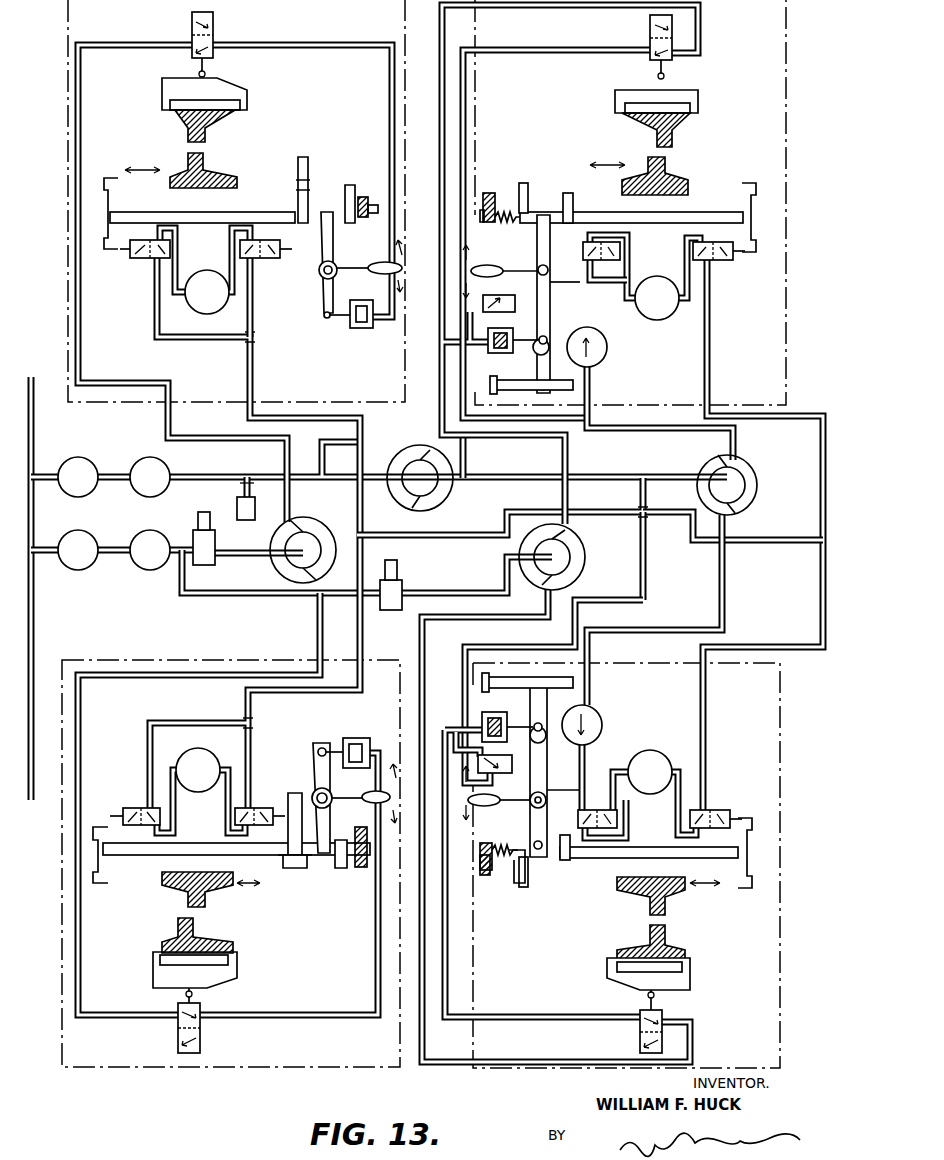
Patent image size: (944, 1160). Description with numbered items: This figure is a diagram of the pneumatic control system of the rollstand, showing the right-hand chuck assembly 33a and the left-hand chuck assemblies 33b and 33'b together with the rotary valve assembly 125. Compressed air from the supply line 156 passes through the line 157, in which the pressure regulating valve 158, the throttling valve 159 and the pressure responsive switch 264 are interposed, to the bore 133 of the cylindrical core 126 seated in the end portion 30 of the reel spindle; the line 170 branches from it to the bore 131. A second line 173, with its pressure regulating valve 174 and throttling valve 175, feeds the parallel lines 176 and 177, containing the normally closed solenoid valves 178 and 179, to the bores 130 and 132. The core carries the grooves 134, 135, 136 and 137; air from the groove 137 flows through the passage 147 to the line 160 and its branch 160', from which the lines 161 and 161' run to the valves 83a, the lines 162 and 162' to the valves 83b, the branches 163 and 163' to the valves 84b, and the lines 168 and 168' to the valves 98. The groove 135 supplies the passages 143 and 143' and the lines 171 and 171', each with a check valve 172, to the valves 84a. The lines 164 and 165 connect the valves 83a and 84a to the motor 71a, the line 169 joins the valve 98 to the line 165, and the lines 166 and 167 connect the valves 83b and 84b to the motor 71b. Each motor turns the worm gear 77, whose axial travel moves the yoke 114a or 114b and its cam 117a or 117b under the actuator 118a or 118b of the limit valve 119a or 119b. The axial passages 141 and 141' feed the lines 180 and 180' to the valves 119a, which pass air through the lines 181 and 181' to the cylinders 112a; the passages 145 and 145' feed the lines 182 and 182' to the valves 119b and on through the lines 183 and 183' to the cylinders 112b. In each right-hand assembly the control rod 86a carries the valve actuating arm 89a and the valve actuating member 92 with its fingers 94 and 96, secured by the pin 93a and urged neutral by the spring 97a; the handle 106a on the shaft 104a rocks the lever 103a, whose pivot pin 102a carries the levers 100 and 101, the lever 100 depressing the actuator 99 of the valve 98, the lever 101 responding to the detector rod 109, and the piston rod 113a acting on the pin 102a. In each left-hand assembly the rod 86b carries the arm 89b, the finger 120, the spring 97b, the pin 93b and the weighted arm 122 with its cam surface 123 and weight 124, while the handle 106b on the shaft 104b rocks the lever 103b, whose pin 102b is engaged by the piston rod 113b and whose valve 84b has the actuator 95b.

The end portion of reel spindle 30 is at (322, 518).
The right-hand chuck assembly 33a is at (786, 100).
The left-hand chuck assembly 33b is at (62, 890).
The left-hand chuck assembly 33'b is at (213, 201).
The reversible fluid pressure operated motor 71a is at (657, 320).
The reversible fluid pressure operated motor 71b is at (202, 314).
The worm gear 77 is at (210, 155).
The valve 83a is at (716, 262).
The valve 83b is at (135, 275).
The valve 84a is at (615, 242).
The valve 84b is at (262, 258).
The control rod 86a is at (736, 213).
The control rod 86b is at (272, 213).
The valve actuating arm 89a is at (750, 218).
The valve actuating arm 89b is at (130, 252).
The valve actuating member 92 is at (555, 213).
The pin 93a is at (550, 868).
The pin 93b is at (305, 868).
The finger 94 is at (575, 212).
The actuator of valve 84b 95b is at (292, 800).
The finger 96 is at (525, 190).
The compression spring 97a is at (492, 875).
The compression spring 97b is at (362, 868).
The valve 98 is at (506, 312).
The actuator 99 is at (528, 280).
The actuating lever 100 is at (552, 330).
The lever 101 is at (546, 386).
The pivot pin 102a is at (548, 338).
The pin 102b is at (322, 325).
The double armed lever 103a is at (548, 330).
The lever 103b is at (322, 312).
The shaft 104a is at (535, 822).
The shaft 104b is at (318, 278).
The operating handle 106a is at (502, 533).
The handle 106b is at (367, 532).
The detector rod 109 is at (505, 390).
The cylinder 112a is at (495, 352).
The cylinder 112b is at (362, 330).
The piston rod 113a is at (528, 350).
The piston rod 113b is at (352, 300).
The yoke 114a is at (696, 108).
The yoke 114b is at (240, 100).
The cam 117a is at (693, 90).
The cam 117b is at (162, 80).
The actuator 118a is at (648, 996).
The actuator 118b is at (200, 992).
The limit valve 119a is at (650, 28).
The limit valve 119b is at (213, 22).
The finger 120 is at (350, 185).
The valve actuating arm 122 is at (306, 158).
The cam surface 123 is at (296, 183).
The weight 124 is at (296, 228).
The rotary valve assembly 125 is at (270, 570).
The cylindrical core 126 is at (678, 500).
The compressed air supply bore 130 is at (583, 552).
The compressed air supply bore 131 is at (686, 515).
The compressed air supply bore 132 is at (283, 522).
The compressed air supply bore 133 is at (405, 458).
The groove 134 is at (583, 570).
The groove 135 is at (755, 495).
The groove 136 is at (318, 525).
The groove 137 is at (455, 500).
The axial passage 141 is at (603, 583).
The axial passage 141' is at (574, 553).
The passage 143 is at (766, 522).
The passage 143' is at (714, 478).
The axial passage 145 is at (312, 602).
The axial passage 145' is at (284, 550).
The passage 147 is at (392, 496).
The compressed air supply line 156 is at (33, 612).
The line 157 is at (52, 470).
The pressure regulating valve 158 is at (88, 457).
The throttling valve 159 is at (148, 457).
The line 160 is at (733, 548).
The line 160' is at (500, 521).
The line 161 is at (763, 655).
The line 161' is at (773, 380).
The line 162 is at (268, 671).
The line 162' is at (258, 396).
The line 163 is at (264, 725).
The line 163' is at (265, 337).
The line 164 is at (670, 542).
The line 165 is at (632, 240).
The line 166 is at (182, 248).
The line 167 is at (228, 252).
The line 168 is at (570, 663).
The line 168' is at (624, 517).
The line 169 is at (624, 529).
The line 170 is at (467, 452).
The line 171 is at (674, 662).
The line 171' is at (660, 413).
The check valve 172 is at (607, 352).
The line 173 is at (50, 545).
The pressure regulating valve 174 is at (86, 530).
The throttling valve 175 is at (148, 530).
The line 176 is at (238, 596).
The line 177 is at (259, 562).
The solenoid valve 178 is at (404, 585).
The solenoid valve 179 is at (195, 532).
The line 180 is at (556, 826).
The line 180' is at (546, 264).
The line 181 is at (542, 873).
The line 181' is at (556, 234).
The line 182 is at (199, 804).
The line 182' is at (182, 361).
The line 183 is at (289, 884).
The line 183' is at (235, 160).
The pressure responsive switch 264 is at (237, 508).